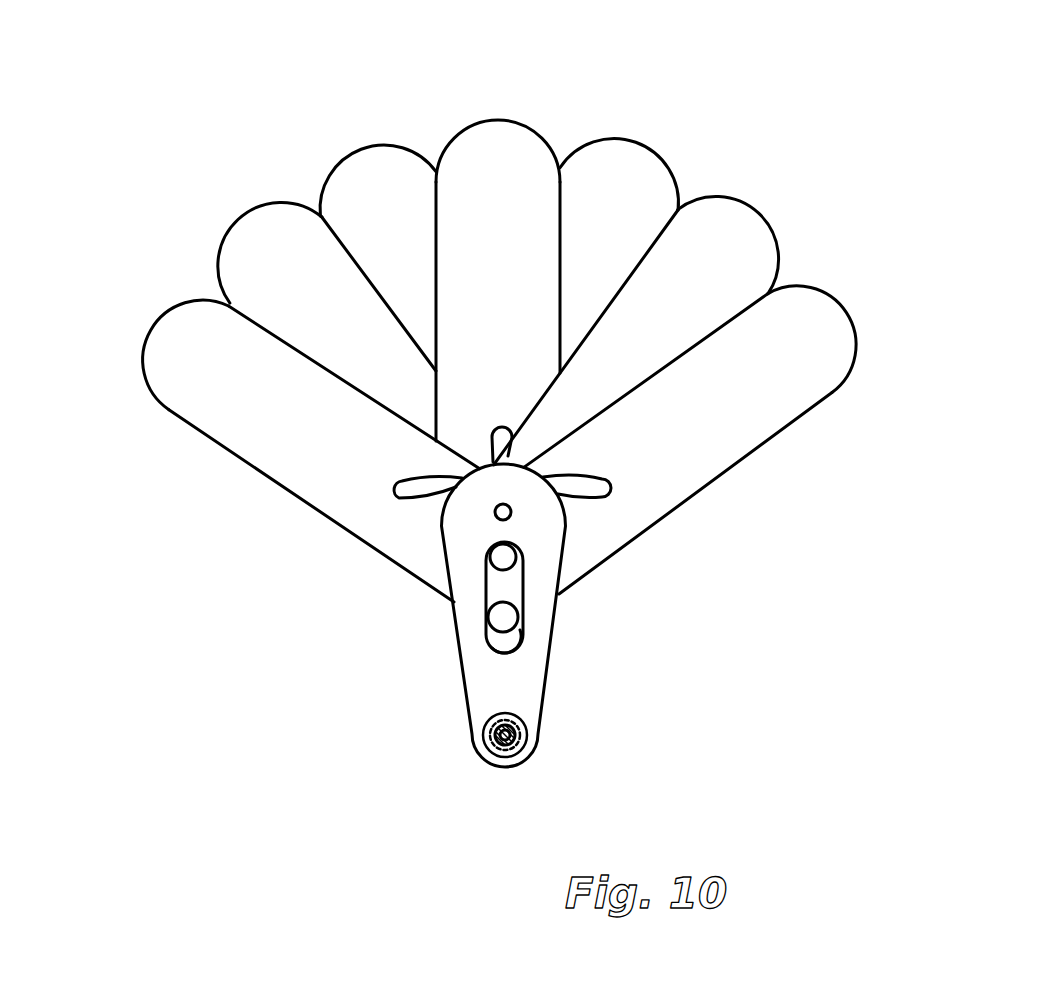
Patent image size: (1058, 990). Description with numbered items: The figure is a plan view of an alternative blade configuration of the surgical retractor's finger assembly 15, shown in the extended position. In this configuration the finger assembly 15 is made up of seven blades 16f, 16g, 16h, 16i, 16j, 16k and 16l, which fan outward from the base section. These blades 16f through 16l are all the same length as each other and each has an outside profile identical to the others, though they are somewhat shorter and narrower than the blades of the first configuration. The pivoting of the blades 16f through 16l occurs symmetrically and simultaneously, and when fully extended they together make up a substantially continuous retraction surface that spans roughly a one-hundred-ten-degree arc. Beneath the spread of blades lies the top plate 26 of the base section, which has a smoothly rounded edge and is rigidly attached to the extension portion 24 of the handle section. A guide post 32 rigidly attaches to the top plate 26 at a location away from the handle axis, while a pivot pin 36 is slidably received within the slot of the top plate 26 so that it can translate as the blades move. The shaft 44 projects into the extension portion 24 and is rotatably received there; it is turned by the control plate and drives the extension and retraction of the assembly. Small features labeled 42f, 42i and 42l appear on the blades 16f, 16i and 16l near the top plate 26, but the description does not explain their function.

The finger assembly 15 is at (150, 178).
The blade 16f is at (828, 348).
The blade 16g is at (753, 242).
The blade 16h is at (645, 162).
The blade 16i is at (513, 142).
The blade 16j is at (378, 167).
The blade 16k is at (267, 220).
The blade 16l is at (180, 320).
The extension portion 24 is at (485, 750).
The top plate 26 is at (533, 655).
The guide post 32 is at (495, 512).
The pivot pin 36 is at (503, 556).
The tab 42f is at (597, 472).
The tab 42i is at (500, 426).
The tab 42l is at (402, 478).
The shaft 44 is at (528, 722).